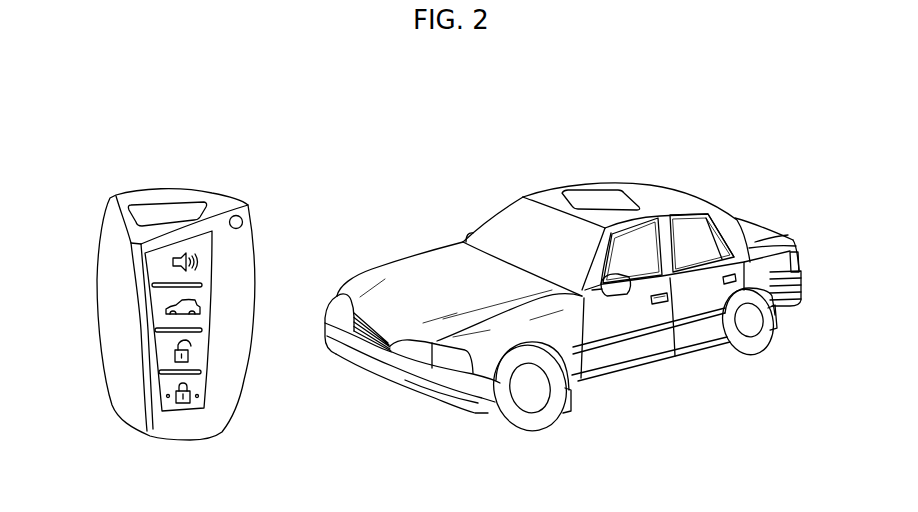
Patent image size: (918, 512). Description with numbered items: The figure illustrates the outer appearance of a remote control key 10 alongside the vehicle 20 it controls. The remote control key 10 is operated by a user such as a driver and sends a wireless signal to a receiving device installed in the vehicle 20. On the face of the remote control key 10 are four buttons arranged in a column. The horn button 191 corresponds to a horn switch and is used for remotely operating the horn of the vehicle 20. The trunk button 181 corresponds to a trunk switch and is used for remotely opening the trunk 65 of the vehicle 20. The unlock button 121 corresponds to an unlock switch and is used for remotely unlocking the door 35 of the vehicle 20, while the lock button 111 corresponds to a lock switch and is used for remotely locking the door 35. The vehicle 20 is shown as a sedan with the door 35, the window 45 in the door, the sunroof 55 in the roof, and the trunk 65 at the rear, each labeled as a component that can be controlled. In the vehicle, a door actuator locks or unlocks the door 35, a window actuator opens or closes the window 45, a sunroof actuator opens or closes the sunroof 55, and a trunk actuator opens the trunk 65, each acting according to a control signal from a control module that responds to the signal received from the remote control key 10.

The remote control key 10 is at (200, 275).
The horn button 191 is at (205, 263).
The trunk button 181 is at (205, 311).
The unlock button 121 is at (205, 352).
The lock button 111 is at (207, 385).
The vehicle 20 is at (563, 267).
The sunroof 55 is at (579, 191).
The window 45 is at (643, 246).
The trunk 65 is at (750, 224).
The door 35 is at (635, 325).